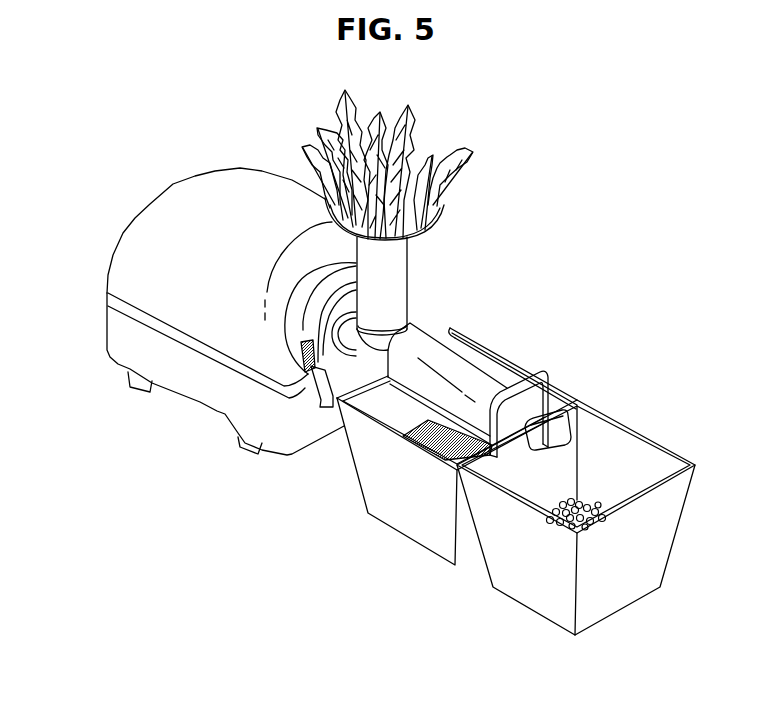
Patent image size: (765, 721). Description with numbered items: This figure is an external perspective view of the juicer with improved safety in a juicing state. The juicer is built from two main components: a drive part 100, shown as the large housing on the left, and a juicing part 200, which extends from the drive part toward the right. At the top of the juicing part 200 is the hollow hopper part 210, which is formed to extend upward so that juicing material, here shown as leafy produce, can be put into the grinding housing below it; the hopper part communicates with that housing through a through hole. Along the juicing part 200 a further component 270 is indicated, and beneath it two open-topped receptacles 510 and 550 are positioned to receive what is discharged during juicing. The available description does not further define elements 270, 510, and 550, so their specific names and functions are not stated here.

The drive part 100 is at (118, 191).
The juicing part 200 is at (525, 268).
The hopper part 210 is at (408, 277).
The guide rail 270 is at (517, 362).
The juice container 510 is at (405, 527).
The pulp container 550 is at (530, 597).